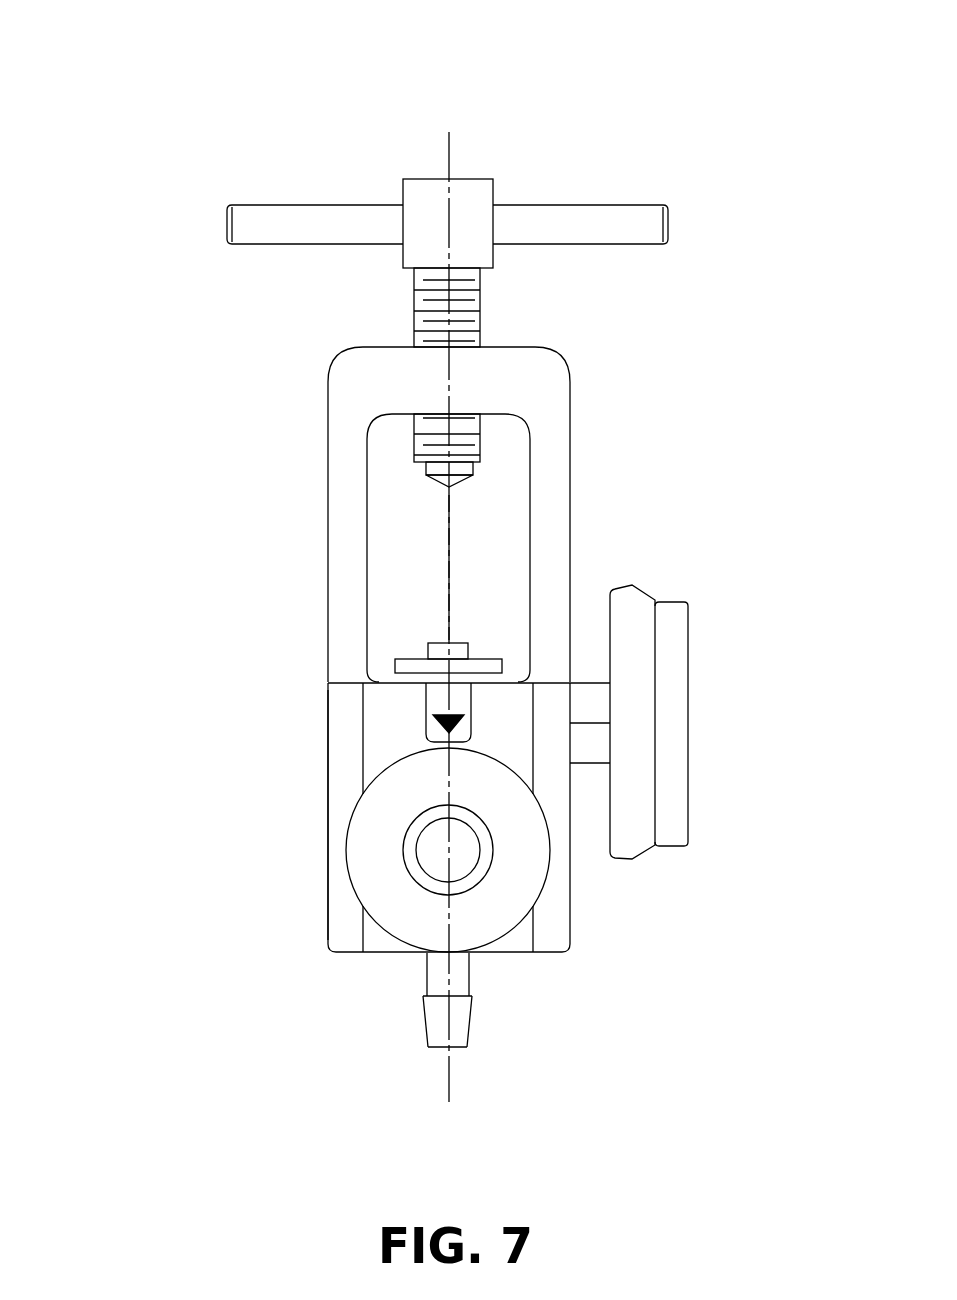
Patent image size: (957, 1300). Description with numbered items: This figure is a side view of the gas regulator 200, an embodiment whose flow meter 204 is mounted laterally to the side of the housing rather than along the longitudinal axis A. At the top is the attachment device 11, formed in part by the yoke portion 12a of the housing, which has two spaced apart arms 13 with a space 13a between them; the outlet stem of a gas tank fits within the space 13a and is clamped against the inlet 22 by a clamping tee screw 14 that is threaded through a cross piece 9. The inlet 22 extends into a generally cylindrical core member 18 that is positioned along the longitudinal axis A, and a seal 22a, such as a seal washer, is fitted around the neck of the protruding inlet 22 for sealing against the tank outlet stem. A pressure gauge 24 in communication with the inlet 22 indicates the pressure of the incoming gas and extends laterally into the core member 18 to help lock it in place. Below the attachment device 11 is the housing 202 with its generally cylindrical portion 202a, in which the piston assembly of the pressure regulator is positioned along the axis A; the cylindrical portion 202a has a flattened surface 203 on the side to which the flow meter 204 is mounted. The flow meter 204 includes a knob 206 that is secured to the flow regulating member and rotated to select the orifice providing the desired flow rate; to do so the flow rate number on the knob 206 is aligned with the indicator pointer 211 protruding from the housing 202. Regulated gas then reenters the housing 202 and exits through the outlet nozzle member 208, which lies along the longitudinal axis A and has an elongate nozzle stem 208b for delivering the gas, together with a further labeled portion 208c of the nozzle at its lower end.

The gas regulator 200 is at (452, 574).
The clamping tee screw 14 is at (315, 220).
The cross piece 9 is at (509, 362).
The attachment device 11 is at (490, 487).
The yoke portion 12a is at (551, 437).
The arms 13 is at (547, 473).
The space 13a is at (390, 507).
The core member 18 is at (385, 677).
The inlet 22 is at (452, 643).
The seal 22a is at (488, 663).
The pressure gauge 24 is at (677, 653).
The indicator pointer 211 is at (437, 701).
The housing 202 is at (335, 725).
The flattened surface 203 is at (380, 740).
The generally cylindrical portion 202a is at (326, 832).
The flow meter 204 is at (399, 876).
The knob 206 is at (533, 885).
The outlet nozzle member 208 is at (440, 1011).
The nozzle stem 208b is at (472, 1025).
The lug left side 208c is at (433, 1018).
The longitudinal axis A is at (449, 1087).